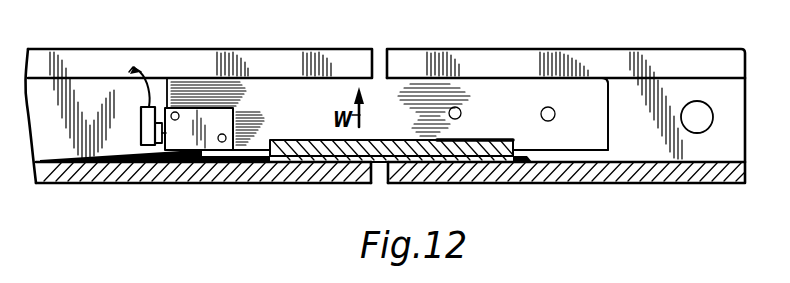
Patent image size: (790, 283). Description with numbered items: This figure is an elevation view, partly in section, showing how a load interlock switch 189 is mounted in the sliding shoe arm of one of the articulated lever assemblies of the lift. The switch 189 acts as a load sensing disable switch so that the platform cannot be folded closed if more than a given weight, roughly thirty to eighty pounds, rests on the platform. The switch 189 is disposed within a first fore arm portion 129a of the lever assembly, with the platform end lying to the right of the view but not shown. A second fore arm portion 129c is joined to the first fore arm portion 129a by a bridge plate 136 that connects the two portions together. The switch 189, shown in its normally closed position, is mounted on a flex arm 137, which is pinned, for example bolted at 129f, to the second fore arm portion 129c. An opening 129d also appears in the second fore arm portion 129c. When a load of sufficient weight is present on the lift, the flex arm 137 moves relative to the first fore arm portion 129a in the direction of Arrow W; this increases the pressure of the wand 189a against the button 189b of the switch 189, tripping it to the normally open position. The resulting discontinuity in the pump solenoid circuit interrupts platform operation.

The first fore arm portion 129a is at (346, 64).
The second fore arm portion 129c is at (402, 65).
The aperture 129d is at (696, 106).
The bolt 129f is at (461, 112).
The flex arm 137 is at (529, 113).
The bridge plate 136 is at (385, 147).
The load interlock switch 189 is at (191, 118).
The wand 189a is at (194, 155).
The button 189b is at (186, 161).